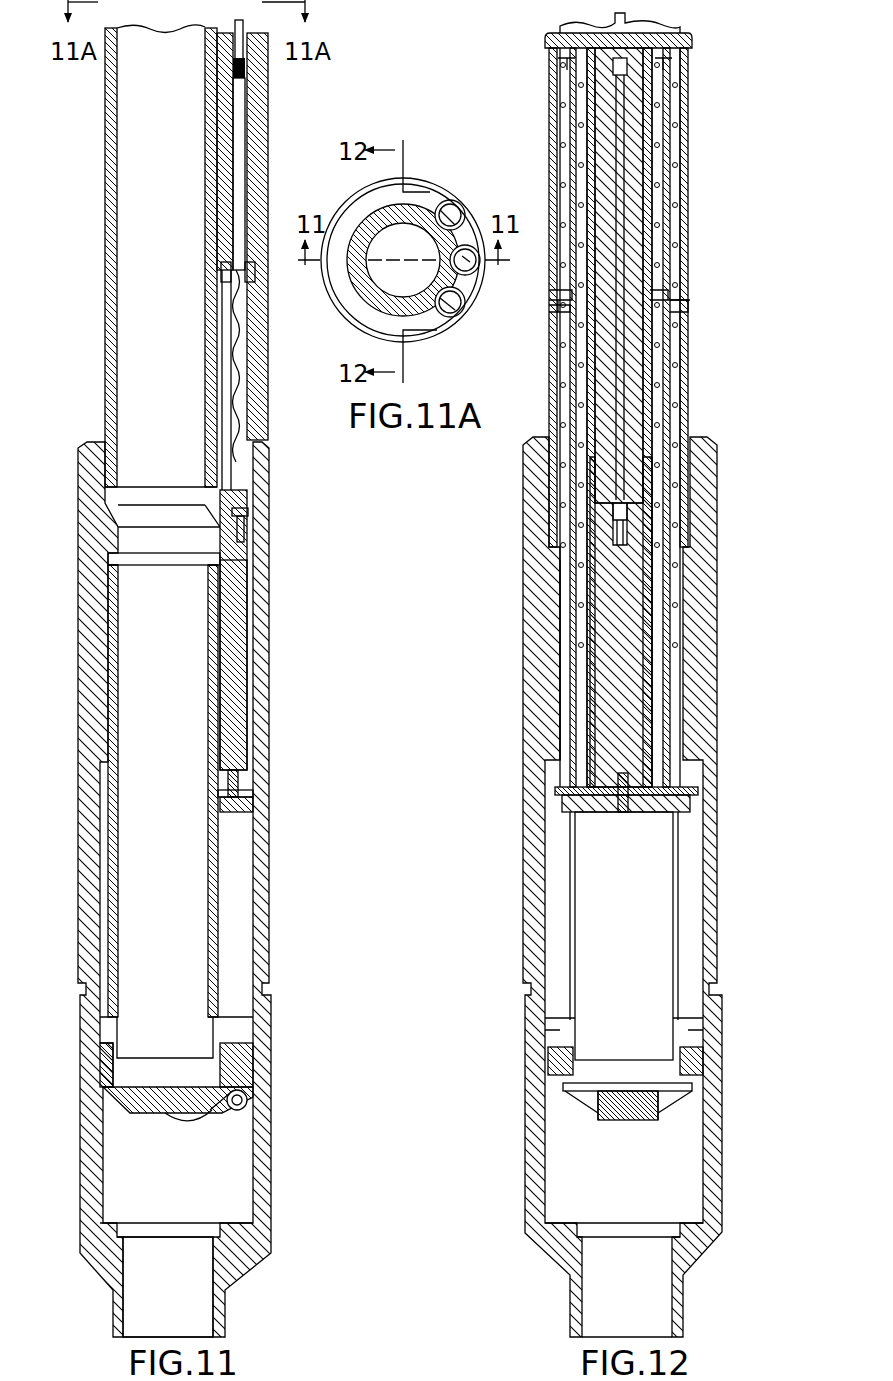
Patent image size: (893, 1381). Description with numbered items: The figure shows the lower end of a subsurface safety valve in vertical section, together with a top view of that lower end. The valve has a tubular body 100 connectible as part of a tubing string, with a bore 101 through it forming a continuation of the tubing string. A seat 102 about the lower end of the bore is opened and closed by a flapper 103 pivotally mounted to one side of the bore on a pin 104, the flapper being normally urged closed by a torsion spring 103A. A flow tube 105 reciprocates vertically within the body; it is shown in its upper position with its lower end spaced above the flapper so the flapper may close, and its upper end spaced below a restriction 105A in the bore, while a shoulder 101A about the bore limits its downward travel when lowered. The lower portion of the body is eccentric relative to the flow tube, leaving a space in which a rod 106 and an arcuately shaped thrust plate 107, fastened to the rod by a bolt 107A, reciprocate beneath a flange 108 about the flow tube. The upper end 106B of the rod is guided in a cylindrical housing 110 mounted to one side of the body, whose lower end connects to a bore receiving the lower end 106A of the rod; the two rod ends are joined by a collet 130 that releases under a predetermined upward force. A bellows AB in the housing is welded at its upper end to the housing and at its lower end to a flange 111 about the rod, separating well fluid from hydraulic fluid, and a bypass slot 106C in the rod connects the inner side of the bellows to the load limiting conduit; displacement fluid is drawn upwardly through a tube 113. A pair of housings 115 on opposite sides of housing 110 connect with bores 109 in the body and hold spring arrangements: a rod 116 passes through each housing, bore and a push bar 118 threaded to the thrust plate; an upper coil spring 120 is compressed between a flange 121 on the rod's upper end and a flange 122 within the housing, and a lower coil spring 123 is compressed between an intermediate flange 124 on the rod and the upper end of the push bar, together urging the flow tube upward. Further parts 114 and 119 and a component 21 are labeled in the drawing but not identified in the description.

In FIG. 11, the tubular body 100 is at (272, 678).
In FIG. 11, the bore 101 is at (113, 298).
In FIG. 11, the shoulder 101A is at (128, 1237).
In FIG. 11, the seat 102 is at (103, 1092).
In FIG. 12, the seat 102 is at (560, 1086).
In FIG. 11, the flapper 103 is at (172, 1116).
In FIG. 12, the flapper 103 is at (672, 1098).
In FIG. 11, the torsion spring 103A is at (206, 1125).
In FIG. 12, the torsion spring 103A is at (622, 1120).
In FIG. 11, the pin 104 is at (248, 1096).
In FIG. 11, the flow tube 105 is at (212, 826).
In FIG. 12, the flow tube 105 is at (655, 926).
In FIG. 11, the restriction 105A is at (212, 500).
In FIG. 11, the rod 106 is at (247, 414).
In FIG. 11, the lower end of rod 106A is at (250, 596).
In FIG. 11, the upper end of rod 106B is at (238, 365).
In FIG. 11, the bypass slot 106C is at (247, 128).
In FIG. 11, the thrust plate 107 is at (254, 810).
In FIG. 12, the thrust plate 107 is at (690, 805).
In FIG. 11, the bolt 107A is at (240, 784).
In FIG. 12, the bolt 107A is at (623, 814).
In FIG. 11, the flange 108 is at (228, 782).
In FIG. 12, the flange 108 is at (668, 790).
In FIG. 12, the bores 109 is at (562, 485).
In FIG. 11, the cylindrical housing 110 is at (262, 160).
In FIG. 11A, the cylindrical housing 110 is at (466, 243).
In FIG. 12, the cylindrical housing 110 is at (645, 128).
In FIG. 11, the flange 111 is at (250, 518).
In FIG. 11, the tube 113 is at (240, 22).
In FIG. 11, the spring seat 114 is at (255, 278).
In FIG. 11A, the housings 115 is at (448, 200).
In FIG. 12, the housings 115 is at (554, 300).
In FIG. 12, the rod 116 is at (565, 108).
In FIG. 12, the push bars 118 is at (690, 632).
In FIG. 12, the housing bore 119 is at (562, 608).
In FIG. 12, the upper coil spring 120 is at (678, 180).
In FIG. 12, the flange 121 is at (672, 58).
In FIG. 12, the flange 122 is at (676, 297).
In FIG. 12, the coil spring 123 is at (676, 358).
In FIG. 12, the intermediate flange 124 is at (556, 315).
In FIG. 11, the collet 130 is at (247, 538).
In FIG. 11A, the hatched sleeve 21 is at (406, 205).
In FIG. 11, the bellows AB is at (240, 338).